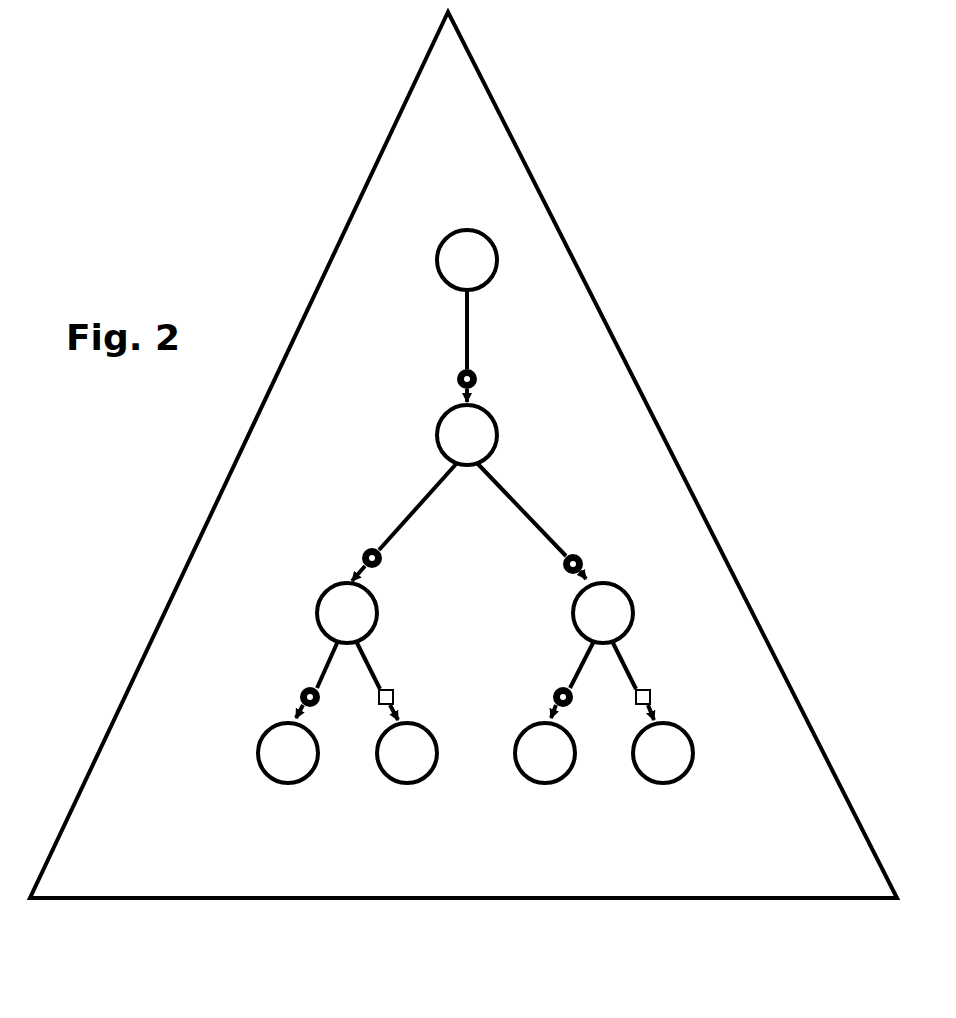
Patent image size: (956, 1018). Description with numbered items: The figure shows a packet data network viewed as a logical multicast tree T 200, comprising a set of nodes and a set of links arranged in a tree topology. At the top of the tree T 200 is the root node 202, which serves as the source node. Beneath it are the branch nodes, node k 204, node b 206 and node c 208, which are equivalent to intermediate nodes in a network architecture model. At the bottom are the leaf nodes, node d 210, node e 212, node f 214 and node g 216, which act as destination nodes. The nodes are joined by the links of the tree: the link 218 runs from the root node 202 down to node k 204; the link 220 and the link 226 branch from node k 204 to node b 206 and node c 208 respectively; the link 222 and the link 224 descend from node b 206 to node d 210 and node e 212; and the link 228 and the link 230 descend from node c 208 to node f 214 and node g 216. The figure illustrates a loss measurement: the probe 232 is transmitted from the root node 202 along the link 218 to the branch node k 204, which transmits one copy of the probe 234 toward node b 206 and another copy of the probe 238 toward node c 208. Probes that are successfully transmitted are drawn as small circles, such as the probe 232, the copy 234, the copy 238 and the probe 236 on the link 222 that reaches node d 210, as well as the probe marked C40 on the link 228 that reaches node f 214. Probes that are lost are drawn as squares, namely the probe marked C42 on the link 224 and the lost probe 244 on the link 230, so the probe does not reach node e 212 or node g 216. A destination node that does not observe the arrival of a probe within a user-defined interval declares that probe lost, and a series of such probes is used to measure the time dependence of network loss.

The logical multicast tree T 200 is at (268, 898).
The root node 0 202 is at (437, 263).
The node k 204 is at (435, 443).
The node b 206 is at (315, 617).
The node c 208 is at (632, 605).
The node d 210 is at (258, 762).
The node e 212 is at (428, 773).
The node f 214 is at (542, 780).
The node g 216 is at (675, 782).
The link k 218 is at (470, 316).
The link b 220 is at (427, 508).
The link d 222 is at (338, 657).
The link e 224 is at (360, 658).
The link c 226 is at (515, 512).
The link f 228 is at (588, 657).
The link g 230 is at (628, 677).
The probe i 232 is at (477, 382).
The copy of the probe 234 is at (362, 556).
The copy of the probe 236 is at (300, 698).
The copy of the probe 238 is at (585, 560).
The lost probe 244 is at (650, 695).
The probe C40 on link f C40 is at (552, 697).
The marker C42 on link e C42 is at (393, 695).